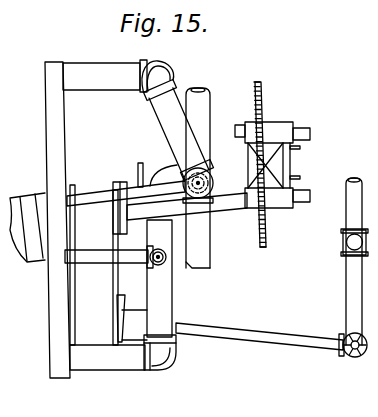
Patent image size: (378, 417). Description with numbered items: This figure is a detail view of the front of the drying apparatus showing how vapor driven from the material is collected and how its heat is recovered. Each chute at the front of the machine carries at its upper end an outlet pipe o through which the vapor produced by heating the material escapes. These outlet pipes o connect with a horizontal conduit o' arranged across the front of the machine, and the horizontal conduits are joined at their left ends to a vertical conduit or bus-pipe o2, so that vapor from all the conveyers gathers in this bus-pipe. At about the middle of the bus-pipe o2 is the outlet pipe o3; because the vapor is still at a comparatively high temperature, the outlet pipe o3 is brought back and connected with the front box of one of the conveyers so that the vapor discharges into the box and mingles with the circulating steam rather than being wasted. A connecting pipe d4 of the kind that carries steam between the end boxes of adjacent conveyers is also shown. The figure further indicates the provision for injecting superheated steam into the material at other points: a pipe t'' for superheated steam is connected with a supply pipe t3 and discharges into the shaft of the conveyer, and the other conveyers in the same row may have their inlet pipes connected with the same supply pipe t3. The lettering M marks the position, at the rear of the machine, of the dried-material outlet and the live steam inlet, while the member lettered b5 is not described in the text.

The outlet pipe o3 is at (163, 107).
The vertical conduit or bus-pipe o2 is at (198, 110).
The outlet pipe o is at (178, 132).
The horizontal conduit o' is at (303, 164).
The position of outlet and live steam inlet M is at (92, 257).
The plank b5 is at (113, 315).
The connecting pipe d4 is at (165, 300).
The pipe for superheated steam t'' is at (259, 318).
The supply pipe t3 is at (350, 302).